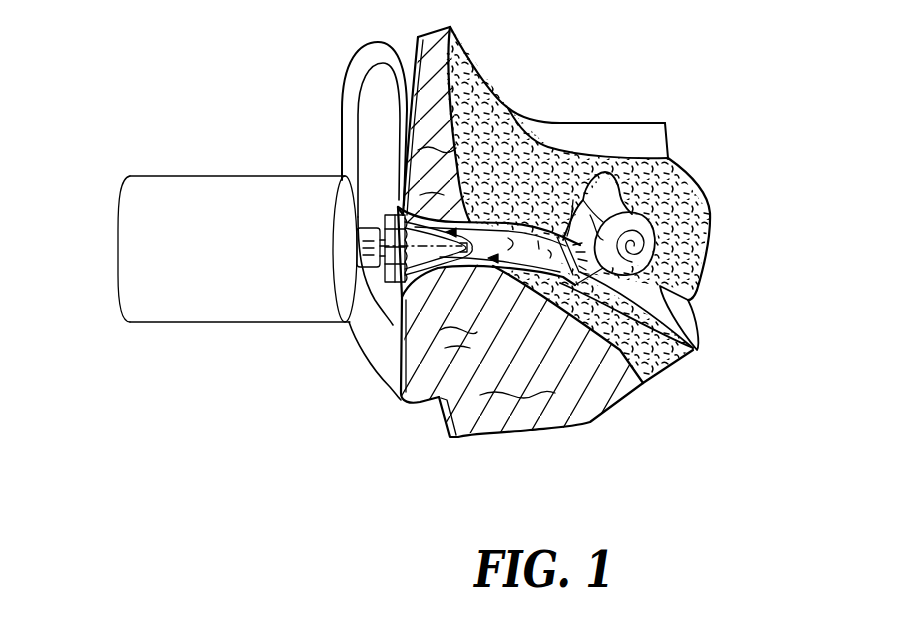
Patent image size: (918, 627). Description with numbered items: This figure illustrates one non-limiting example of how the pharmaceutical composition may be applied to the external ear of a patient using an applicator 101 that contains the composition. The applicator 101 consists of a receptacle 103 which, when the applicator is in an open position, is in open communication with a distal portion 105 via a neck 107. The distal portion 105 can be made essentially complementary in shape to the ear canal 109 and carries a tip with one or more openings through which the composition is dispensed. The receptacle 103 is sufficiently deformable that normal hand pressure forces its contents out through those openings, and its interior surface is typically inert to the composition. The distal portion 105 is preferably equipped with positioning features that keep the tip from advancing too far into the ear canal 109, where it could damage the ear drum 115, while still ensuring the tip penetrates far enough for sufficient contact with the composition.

The applicator 101 is at (172, 116).
The receptacle 103 is at (165, 312).
The distal portion 105 is at (448, 287).
The neck 107 is at (400, 293).
The ear canal 109 is at (503, 165).
The ear drum 115 is at (660, 286).